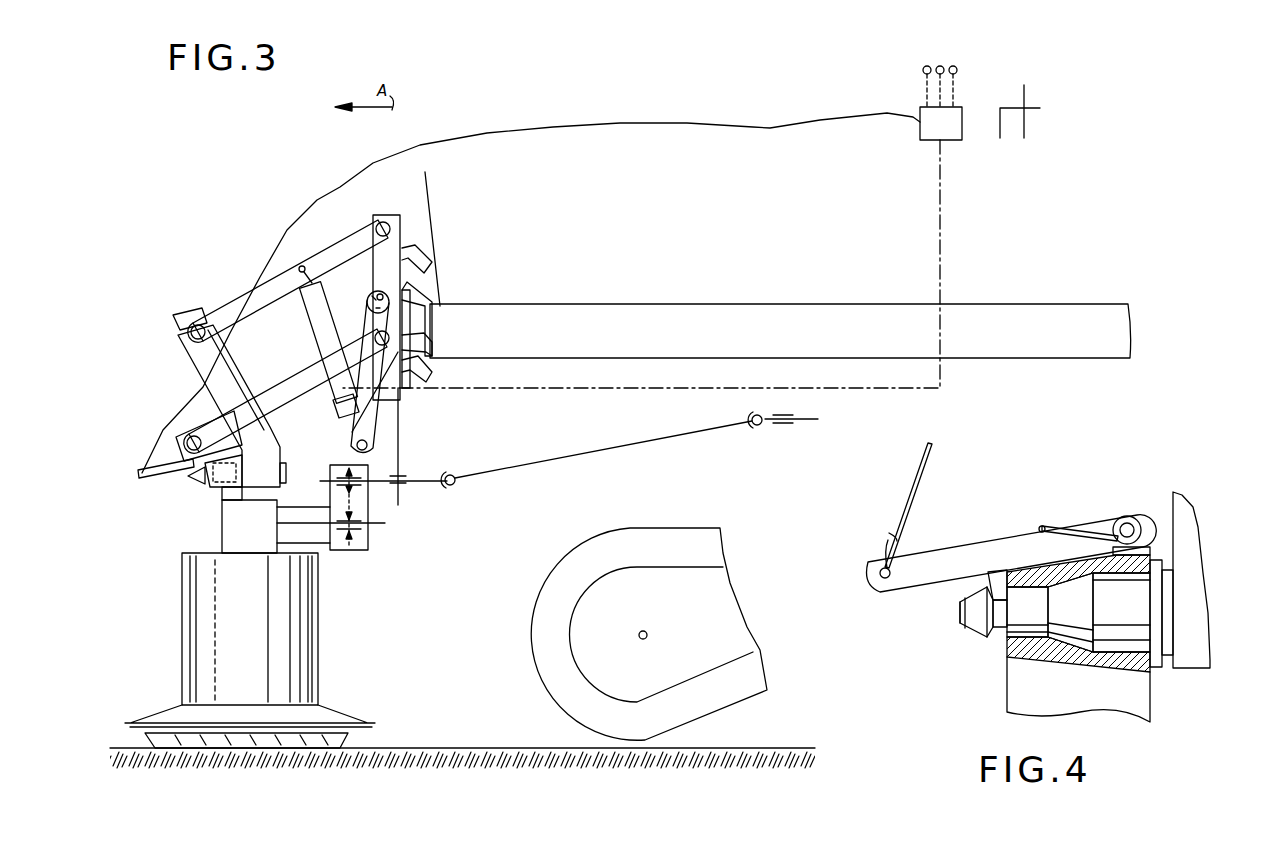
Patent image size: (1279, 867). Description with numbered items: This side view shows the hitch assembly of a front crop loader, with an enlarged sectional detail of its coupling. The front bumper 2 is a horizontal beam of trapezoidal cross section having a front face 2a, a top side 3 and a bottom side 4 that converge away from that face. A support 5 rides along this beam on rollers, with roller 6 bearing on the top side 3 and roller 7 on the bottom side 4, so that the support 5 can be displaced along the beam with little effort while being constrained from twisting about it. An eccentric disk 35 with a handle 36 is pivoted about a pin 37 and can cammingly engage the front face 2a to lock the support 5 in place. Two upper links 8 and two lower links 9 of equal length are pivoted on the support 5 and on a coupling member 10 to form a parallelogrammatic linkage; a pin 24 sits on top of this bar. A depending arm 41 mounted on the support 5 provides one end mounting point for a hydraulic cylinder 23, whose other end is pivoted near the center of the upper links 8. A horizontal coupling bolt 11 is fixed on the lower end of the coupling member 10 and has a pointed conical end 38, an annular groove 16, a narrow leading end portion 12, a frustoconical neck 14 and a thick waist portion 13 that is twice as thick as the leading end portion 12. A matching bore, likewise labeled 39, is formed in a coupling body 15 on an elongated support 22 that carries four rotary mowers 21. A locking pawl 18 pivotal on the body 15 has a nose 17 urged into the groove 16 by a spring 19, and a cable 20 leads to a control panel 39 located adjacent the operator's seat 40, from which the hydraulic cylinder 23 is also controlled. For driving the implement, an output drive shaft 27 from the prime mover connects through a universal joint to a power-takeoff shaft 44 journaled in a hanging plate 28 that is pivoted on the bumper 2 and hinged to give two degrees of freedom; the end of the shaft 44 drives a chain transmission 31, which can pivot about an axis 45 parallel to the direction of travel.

In FIG. 3, the front bumper 2 is at (406, 295).
In FIG. 3, the front face 2a is at (400, 315).
In FIG. 3, the top side 3 is at (430, 303).
In FIG. 3, the bottom side 4 is at (416, 340).
In FIG. 3, the support 5 is at (378, 260).
In FIG. 3, the roller 6 is at (427, 270).
In FIG. 3, the roller 7 is at (418, 376).
In FIG. 3, the upper links 8 is at (326, 257).
In FIG. 3, the lower links 9 is at (277, 393).
In FIG. 3, the coupling member 10 is at (257, 457).
In FIG. 3, the coupling bolt 11 is at (236, 476).
In FIG. 4, the coupling bolt 11 is at (1172, 597).
In FIG. 4, the leading end portion 12 is at (1039, 622).
In FIG. 4, the waist portion 13 is at (1123, 643).
In FIG. 4, the frustoconical neck 14 is at (1082, 622).
In FIG. 3, the coupling body 15 is at (227, 493).
In FIG. 4, the coupling body 15 is at (1063, 658).
In FIG. 4, the annular groove 16 is at (1000, 633).
In FIG. 4, the nose 17 is at (998, 578).
In FIG. 3, the locking pawl 18 is at (160, 480).
In FIG. 4, the locking pawl 18 is at (985, 545).
In FIG. 4, the spring 19 is at (1043, 526).
In FIG. 3, the cable 20 is at (183, 400).
In FIG. 4, the cable 20 is at (920, 478).
In FIG. 3, the rotary mowers 21 is at (197, 632).
In FIG. 3, the elongated support 22 is at (230, 535).
In FIG. 3, the hydraulic cylinder 23 is at (317, 318).
In FIG. 3, the pin 24 is at (198, 294).
In FIG. 3, the output drive shaft 27 is at (677, 436).
In FIG. 3, the hanging plate 28 is at (400, 447).
In FIG. 3, the chain transmission 31 is at (370, 545).
In FIG. 3, the eccentric disk 35 is at (368, 300).
In FIG. 3, the handle 36 is at (343, 391).
In FIG. 3, the pin 37 is at (377, 290).
In FIG. 4, the conical end 38 is at (970, 610).
In FIG. 3, the control panel 39 is at (952, 115).
In FIG. 4, the control panel 39 is at (1131, 573).
In FIG. 3, the operator's seat 40 is at (1036, 111).
In FIG. 3, the depending arm 41 is at (374, 432).
In FIG. 3, the power-takeoff shaft 44 is at (420, 480).
In FIG. 3, the axis 45 is at (305, 513).